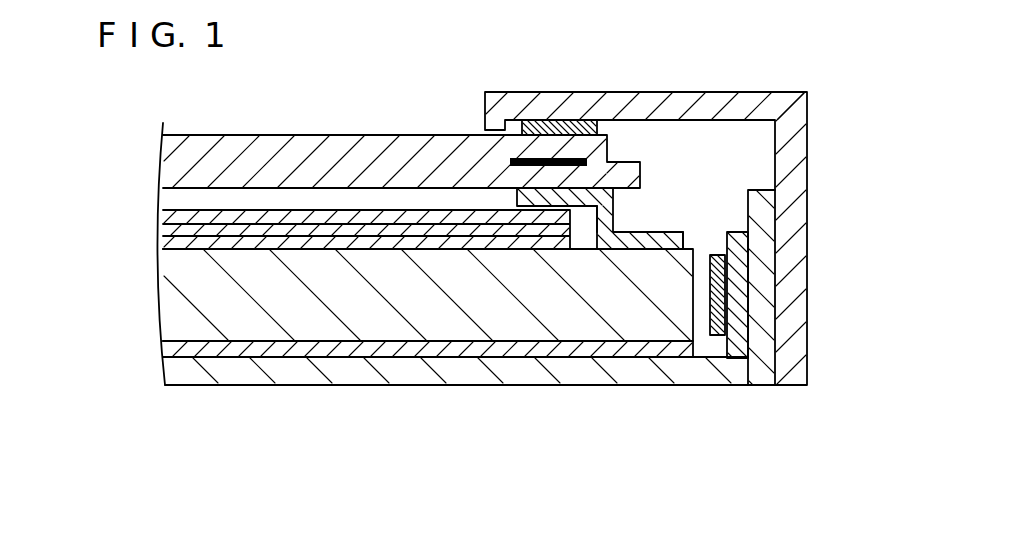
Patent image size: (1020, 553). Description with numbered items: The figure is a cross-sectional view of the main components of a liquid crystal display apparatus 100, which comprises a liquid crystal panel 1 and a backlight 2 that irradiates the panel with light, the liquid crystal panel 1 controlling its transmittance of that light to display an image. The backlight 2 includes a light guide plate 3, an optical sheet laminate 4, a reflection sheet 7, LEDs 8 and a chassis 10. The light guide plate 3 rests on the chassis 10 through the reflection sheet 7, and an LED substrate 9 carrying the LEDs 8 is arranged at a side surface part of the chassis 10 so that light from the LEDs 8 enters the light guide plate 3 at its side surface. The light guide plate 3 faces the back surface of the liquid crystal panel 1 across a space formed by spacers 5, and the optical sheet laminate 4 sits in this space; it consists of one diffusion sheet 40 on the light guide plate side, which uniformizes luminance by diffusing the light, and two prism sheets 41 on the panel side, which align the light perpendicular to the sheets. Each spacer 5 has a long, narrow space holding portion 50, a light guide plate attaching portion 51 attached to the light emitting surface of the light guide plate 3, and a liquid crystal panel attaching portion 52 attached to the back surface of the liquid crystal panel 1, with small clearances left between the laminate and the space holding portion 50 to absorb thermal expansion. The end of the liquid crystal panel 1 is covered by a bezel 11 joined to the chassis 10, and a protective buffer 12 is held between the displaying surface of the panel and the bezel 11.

The liquid crystal display apparatus 100 is at (440, 70).
The liquid crystal panel 1 is at (170, 176).
The backlight 2 is at (79, 270).
The light guide plate 3 is at (174, 298).
The optical sheet laminate 4 is at (90, 189).
The diffusion sheet 40 is at (172, 244).
The prism sheets 41 is at (172, 220).
The spacer 5 is at (614, 207).
The space holding portion 50 is at (652, 211).
The light guide plate attaching portion 51 is at (656, 231).
The liquid crystal panel attaching portion 52 is at (518, 197).
The reflection sheet 7 is at (174, 350).
The LEDs 8 is at (715, 336).
The LED substrate 9 is at (737, 349).
The chassis 10 is at (555, 386).
The bezel 11 is at (800, 119).
The buffer 12 is at (600, 124).